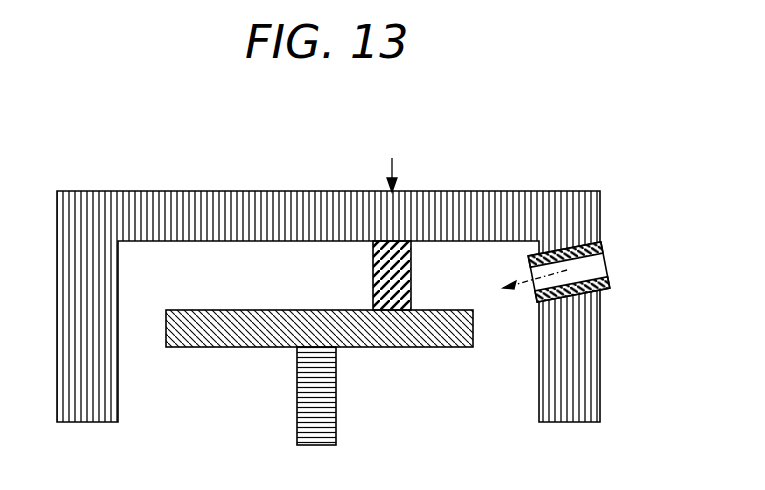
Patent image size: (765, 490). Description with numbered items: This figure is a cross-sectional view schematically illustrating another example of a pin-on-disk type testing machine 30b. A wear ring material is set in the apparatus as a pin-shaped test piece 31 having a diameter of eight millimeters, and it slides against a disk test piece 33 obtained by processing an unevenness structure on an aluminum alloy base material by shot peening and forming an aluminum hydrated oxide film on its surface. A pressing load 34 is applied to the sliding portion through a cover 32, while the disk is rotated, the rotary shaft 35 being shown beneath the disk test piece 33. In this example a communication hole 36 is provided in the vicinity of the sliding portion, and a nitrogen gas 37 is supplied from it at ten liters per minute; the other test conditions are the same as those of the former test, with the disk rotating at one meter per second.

The pin-on-disk type testing machine 30b is at (362, 116).
The pin-shaped test piece 31 is at (412, 246).
The cover 32 is at (568, 207).
The disk test piece 33 is at (473, 334).
The pressing load 34 is at (392, 160).
The rotary shaft 35 is at (322, 403).
The communication hole 36 is at (593, 268).
The nitrogen gas 37 is at (600, 241).